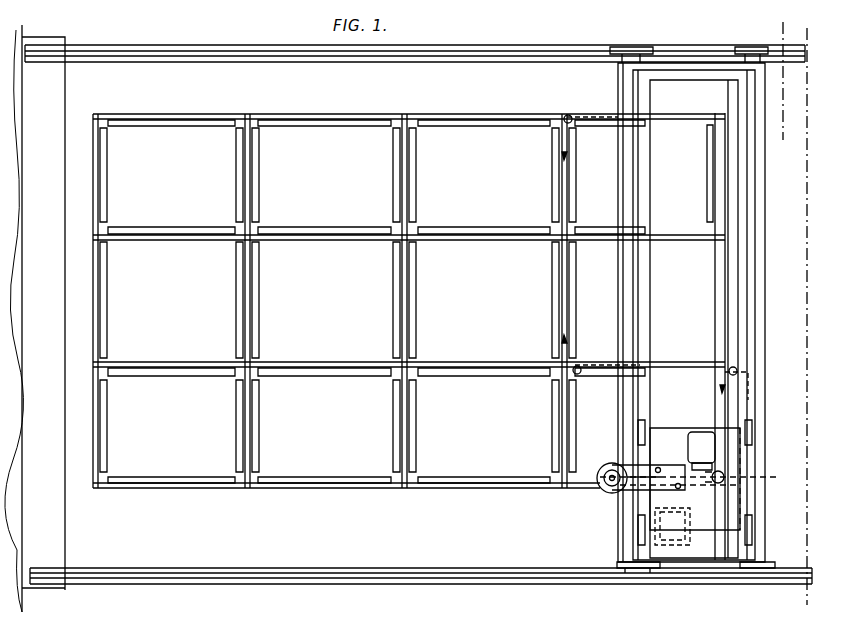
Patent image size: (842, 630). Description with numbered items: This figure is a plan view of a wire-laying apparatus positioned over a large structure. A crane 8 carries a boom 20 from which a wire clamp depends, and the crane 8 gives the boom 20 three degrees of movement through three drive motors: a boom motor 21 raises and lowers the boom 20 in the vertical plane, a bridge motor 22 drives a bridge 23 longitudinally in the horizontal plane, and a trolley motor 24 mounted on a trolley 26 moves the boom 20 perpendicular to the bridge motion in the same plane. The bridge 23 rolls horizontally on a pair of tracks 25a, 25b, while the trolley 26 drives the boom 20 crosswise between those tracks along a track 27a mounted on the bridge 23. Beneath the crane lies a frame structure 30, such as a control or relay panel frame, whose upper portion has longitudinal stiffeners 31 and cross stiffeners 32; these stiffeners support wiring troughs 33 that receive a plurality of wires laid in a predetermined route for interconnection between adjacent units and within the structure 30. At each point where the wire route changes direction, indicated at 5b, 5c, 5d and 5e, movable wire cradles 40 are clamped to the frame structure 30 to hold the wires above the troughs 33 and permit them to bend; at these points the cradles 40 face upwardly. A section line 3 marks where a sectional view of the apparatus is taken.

The section line 3- 3 is at (768, 24).
The point of turning 5b is at (695, 472).
The point of turning 5c is at (732, 374).
The point of turning 5d is at (580, 364).
The point of turning 5e is at (569, 114).
The crane 8 is at (612, 527).
The boom 20 is at (717, 484).
The boom motor 21 is at (690, 445).
The bridge motor 22 is at (690, 545).
The bridge 23 is at (766, 276).
The trolley motor 24 is at (612, 463).
The track 25a is at (413, 586).
The track 25b is at (494, 48).
The trolley 26 is at (740, 460).
The track 27a is at (640, 300).
The frame structure 30 is at (396, 322).
The longitudinal stiffeners 31 is at (492, 113).
The cross stiffeners 32 is at (250, 118).
The wiring troughs 33 is at (280, 126).
The wire cradles 40 is at (575, 124).